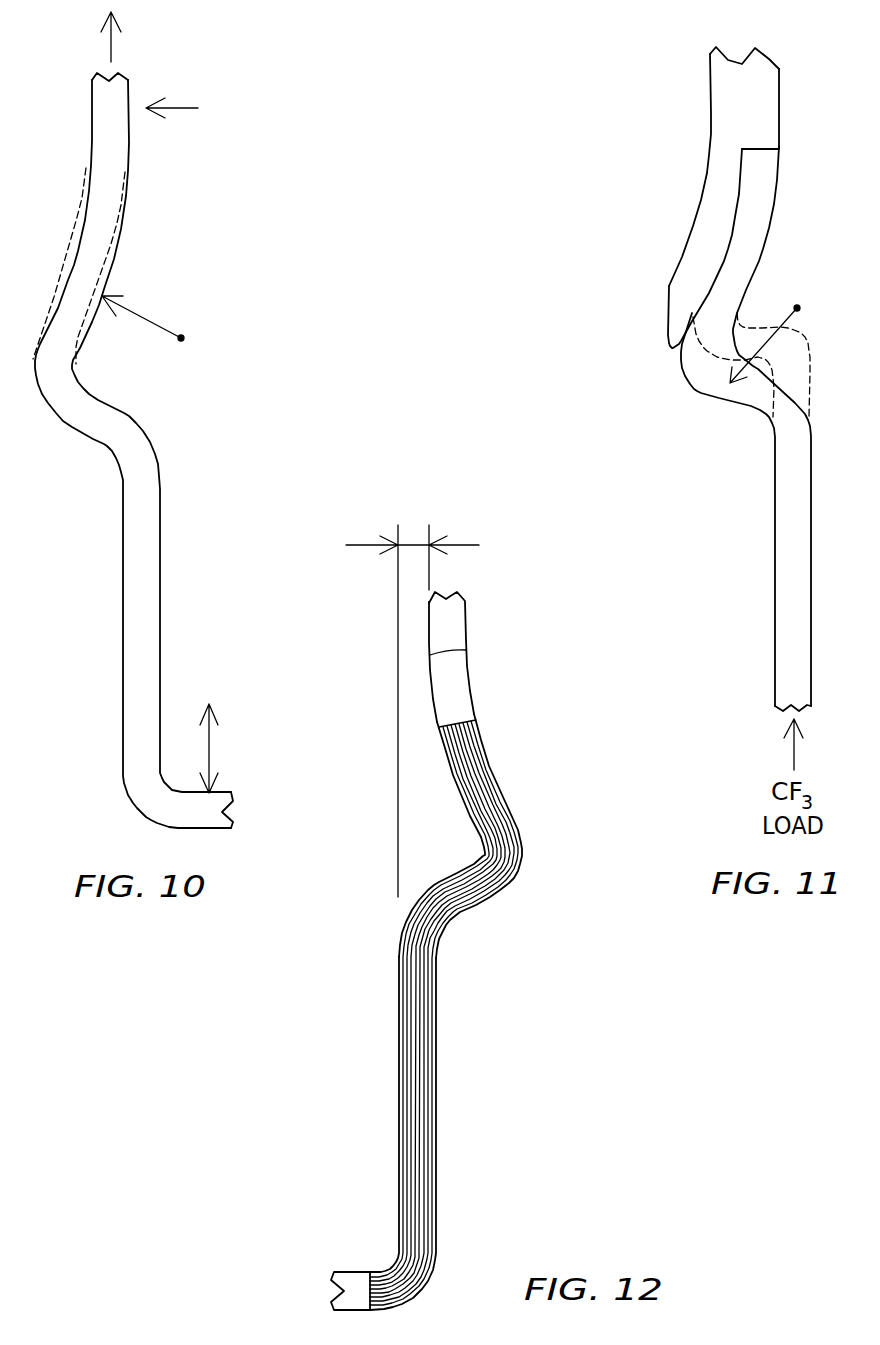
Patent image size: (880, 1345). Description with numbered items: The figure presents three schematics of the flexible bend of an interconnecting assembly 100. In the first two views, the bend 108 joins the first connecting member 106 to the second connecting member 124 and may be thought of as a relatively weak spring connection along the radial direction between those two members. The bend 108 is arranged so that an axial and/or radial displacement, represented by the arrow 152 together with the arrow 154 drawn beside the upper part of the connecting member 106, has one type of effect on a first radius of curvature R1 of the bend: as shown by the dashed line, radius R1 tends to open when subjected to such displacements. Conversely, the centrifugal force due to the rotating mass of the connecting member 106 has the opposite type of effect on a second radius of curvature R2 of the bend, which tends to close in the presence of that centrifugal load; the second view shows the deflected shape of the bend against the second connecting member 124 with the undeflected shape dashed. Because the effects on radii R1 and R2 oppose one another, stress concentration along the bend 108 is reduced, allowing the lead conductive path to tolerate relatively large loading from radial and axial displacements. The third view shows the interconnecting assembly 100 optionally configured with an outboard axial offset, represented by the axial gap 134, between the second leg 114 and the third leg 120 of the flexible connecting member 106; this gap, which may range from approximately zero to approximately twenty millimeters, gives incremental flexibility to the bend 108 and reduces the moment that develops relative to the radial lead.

In FIG. 12, the interconnecting assembly 100 is at (465, 893).
In FIG. 10, the first connecting member 106 is at (144, 450).
In FIG. 11, the first connecting member 106 is at (775, 579).
In FIG. 12, the first connecting member 106 is at (482, 951).
In FIG. 10, the bend 108 is at (113, 384).
In FIG. 12, the bend 108 is at (542, 892).
In FIG. 12, the second leg 114 is at (439, 1134).
In FIG. 12, the third leg 120 is at (455, 648).
In FIG. 11, the second connecting member 124 is at (706, 168).
In FIG. 12, the axial gap 134 is at (414, 545).
In FIG. 10, the arrow representing displacement 152 is at (112, 52).
In FIG. 10, the direction of deflection 154 is at (178, 109).
In FIG. 10, the first radius of curvature R1 is at (140, 313).
In FIG. 11, the second radius of curvature R2 is at (793, 324).